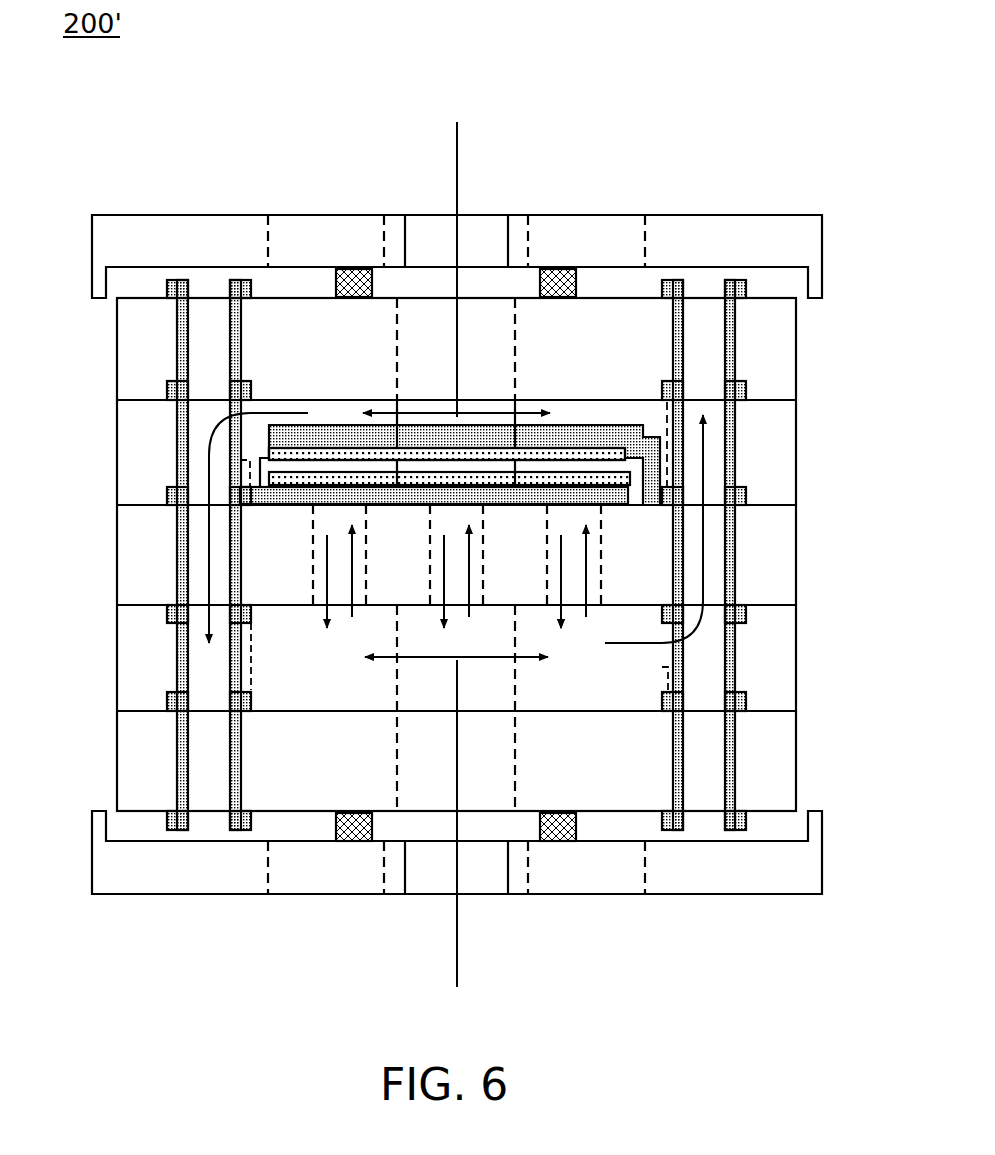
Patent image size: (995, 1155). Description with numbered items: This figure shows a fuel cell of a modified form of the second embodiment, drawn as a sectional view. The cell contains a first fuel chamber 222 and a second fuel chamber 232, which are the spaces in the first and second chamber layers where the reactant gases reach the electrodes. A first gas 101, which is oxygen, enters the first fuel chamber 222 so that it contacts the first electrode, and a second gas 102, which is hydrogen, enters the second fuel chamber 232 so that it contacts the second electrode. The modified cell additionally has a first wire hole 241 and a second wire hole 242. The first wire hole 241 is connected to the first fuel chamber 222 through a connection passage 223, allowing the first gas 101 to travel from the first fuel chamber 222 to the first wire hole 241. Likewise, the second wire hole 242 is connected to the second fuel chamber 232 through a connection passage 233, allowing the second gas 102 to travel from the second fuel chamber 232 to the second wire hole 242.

The first gas 101 is at (457, 153).
The second gas 102 is at (457, 962).
The first fuel chamber 222 is at (610, 412).
The connection passage 223 is at (248, 440).
The second fuel chamber 232 is at (615, 687).
The connection passage 233 is at (667, 657).
The first wire hole 241 is at (180, 756).
The second wire hole 242 is at (735, 757).